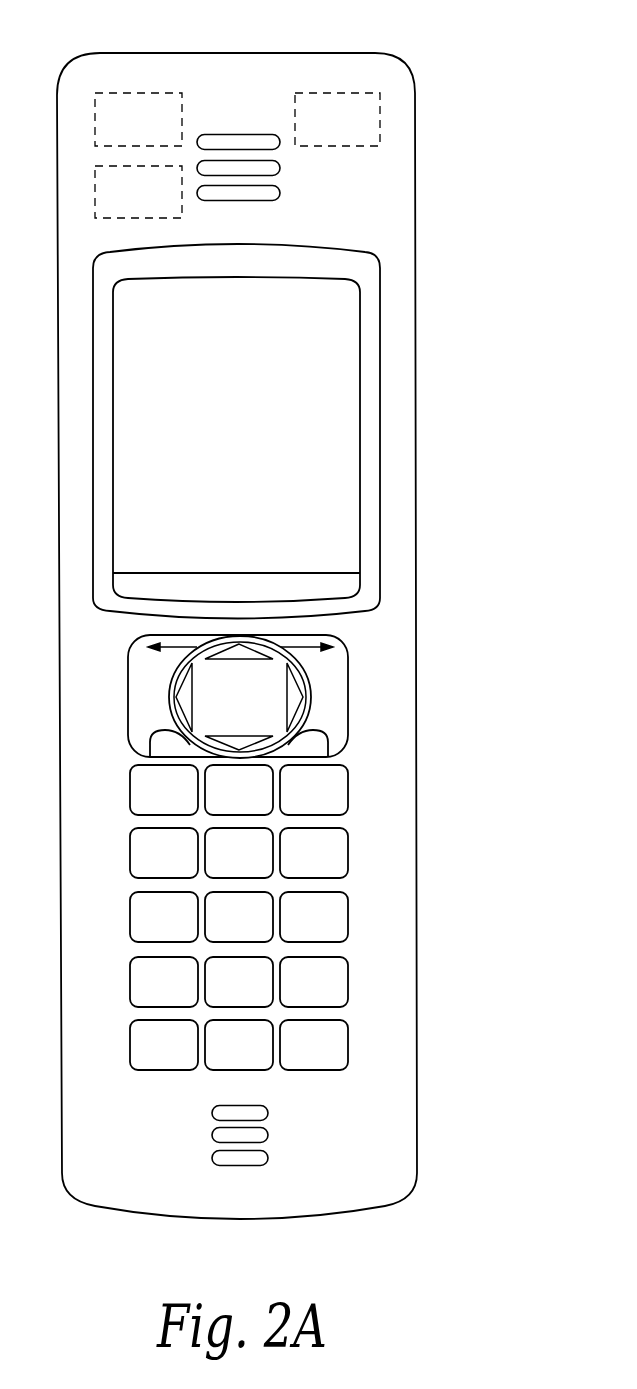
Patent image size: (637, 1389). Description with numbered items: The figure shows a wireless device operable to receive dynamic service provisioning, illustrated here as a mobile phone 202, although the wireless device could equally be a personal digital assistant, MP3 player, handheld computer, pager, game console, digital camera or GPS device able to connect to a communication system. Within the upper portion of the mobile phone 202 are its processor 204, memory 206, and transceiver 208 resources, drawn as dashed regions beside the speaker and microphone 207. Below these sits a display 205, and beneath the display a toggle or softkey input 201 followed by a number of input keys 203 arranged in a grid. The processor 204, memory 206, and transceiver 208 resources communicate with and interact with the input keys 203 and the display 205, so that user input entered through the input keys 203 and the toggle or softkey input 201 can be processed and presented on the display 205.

The toggle or softkey input 201 is at (263, 698).
The mobile phone 202 is at (237, 53).
The input keys 203 is at (417, 762).
The processor 204 is at (138, 119).
The display 205 is at (213, 460).
The memory 206 is at (138, 192).
The speaker and microphone 207 is at (280, 192).
The transceiver 208 is at (337, 119).